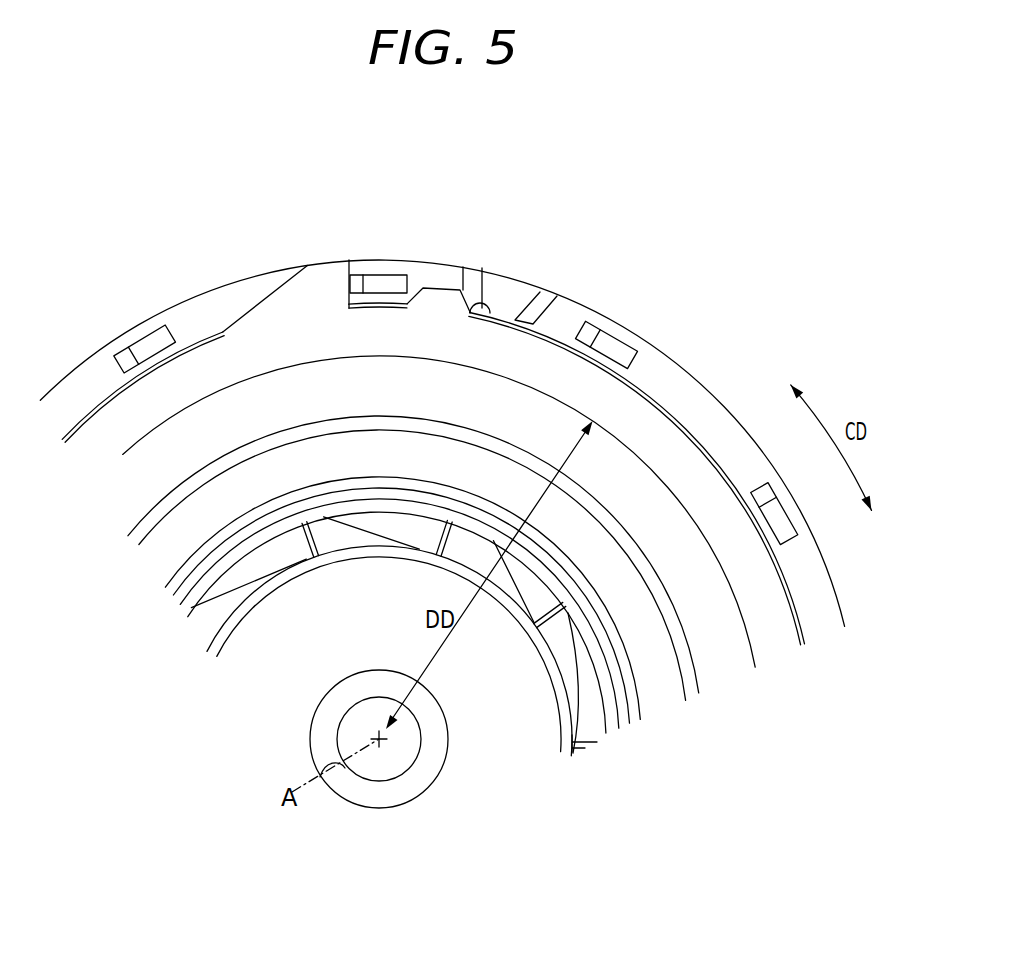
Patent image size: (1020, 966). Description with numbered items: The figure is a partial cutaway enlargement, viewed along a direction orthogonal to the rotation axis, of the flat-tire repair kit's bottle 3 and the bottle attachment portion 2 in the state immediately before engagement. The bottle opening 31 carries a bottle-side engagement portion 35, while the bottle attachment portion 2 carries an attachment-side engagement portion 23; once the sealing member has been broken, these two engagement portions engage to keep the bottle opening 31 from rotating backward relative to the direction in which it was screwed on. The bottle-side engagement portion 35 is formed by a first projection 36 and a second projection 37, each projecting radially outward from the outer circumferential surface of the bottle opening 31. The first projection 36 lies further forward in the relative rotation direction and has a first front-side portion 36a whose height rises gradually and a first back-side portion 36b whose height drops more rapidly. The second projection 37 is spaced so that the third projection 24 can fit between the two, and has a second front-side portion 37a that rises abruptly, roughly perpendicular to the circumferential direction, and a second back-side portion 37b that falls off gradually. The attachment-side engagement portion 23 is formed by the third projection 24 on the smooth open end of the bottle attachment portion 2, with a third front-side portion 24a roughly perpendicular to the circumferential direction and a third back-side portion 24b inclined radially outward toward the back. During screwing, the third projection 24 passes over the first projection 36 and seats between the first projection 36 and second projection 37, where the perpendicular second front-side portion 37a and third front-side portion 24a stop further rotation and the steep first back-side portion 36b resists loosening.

The bottle attachment portion 2 is at (672, 356).
The bottle 3 is at (676, 420).
The attachment-side engagement portion 23 is at (413, 458).
The third projection 24 is at (507, 290).
The third front-side portion 24a is at (470, 282).
The third back-side portion 24b is at (553, 318).
The bottle opening 31 is at (774, 580).
The bottle-side engagement portion 35 is at (448, 138).
The first projection 36 is at (437, 295).
The first front-side portion 36a is at (490, 314).
The first back-side portion 36b is at (383, 305).
The second projection 37 is at (322, 278).
The second front-side portion 37a is at (362, 273).
The second back-side portion 37b is at (280, 290).